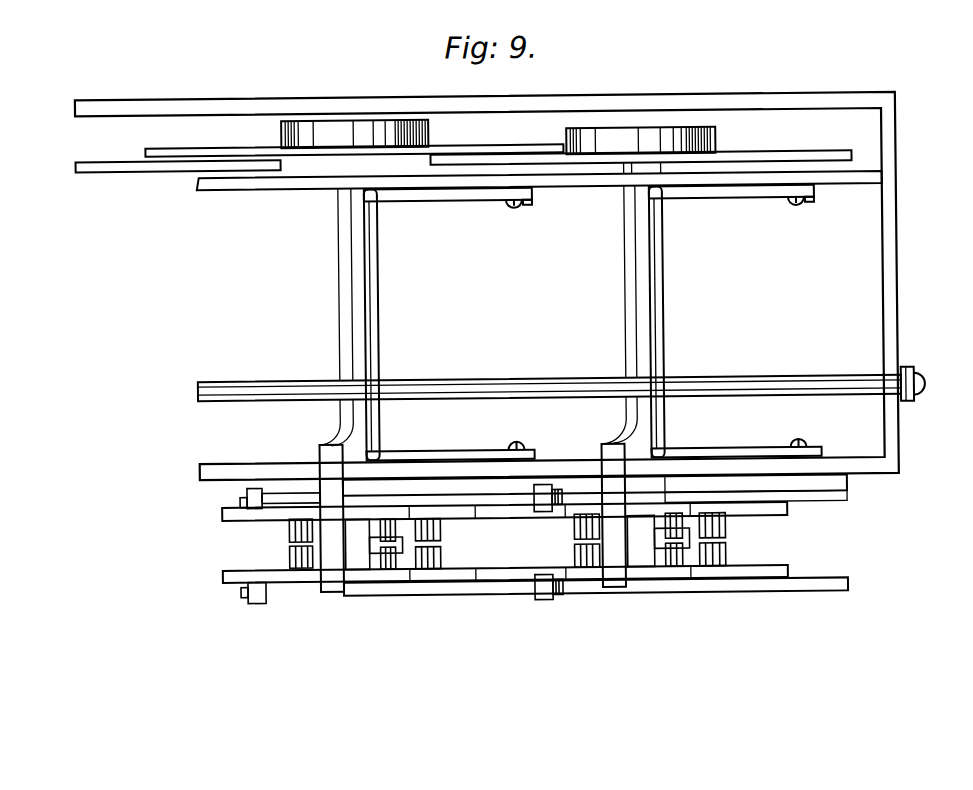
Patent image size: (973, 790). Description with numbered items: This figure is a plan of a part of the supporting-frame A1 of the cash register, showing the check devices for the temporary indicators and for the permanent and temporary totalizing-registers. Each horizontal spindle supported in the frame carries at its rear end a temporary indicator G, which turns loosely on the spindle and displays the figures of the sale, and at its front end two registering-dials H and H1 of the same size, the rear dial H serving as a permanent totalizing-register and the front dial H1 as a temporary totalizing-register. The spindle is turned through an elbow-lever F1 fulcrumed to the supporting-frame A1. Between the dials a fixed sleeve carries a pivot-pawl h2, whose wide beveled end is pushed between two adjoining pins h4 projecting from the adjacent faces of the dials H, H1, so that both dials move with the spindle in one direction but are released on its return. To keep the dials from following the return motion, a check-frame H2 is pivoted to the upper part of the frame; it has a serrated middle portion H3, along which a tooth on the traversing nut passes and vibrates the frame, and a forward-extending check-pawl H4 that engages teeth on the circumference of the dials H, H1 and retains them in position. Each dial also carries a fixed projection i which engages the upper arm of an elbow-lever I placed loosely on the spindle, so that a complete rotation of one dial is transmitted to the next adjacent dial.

The supporting-frame A1 is at (502, 277).
The temporary indicator G is at (463, 156).
The check-frame H2 is at (593, 323).
The elbow-lever F1 is at (378, 302).
The serrated middle portion H3 is at (352, 352).
The check-pawl H4 is at (330, 583).
The elbow-lever I is at (604, 546).
The registering-dial H is at (220, 514).
The registering-dial H1 is at (220, 576).
The fixed projection i is at (245, 493).
The pivot-pawl h2 is at (517, 542).
The pins h4 is at (287, 535).